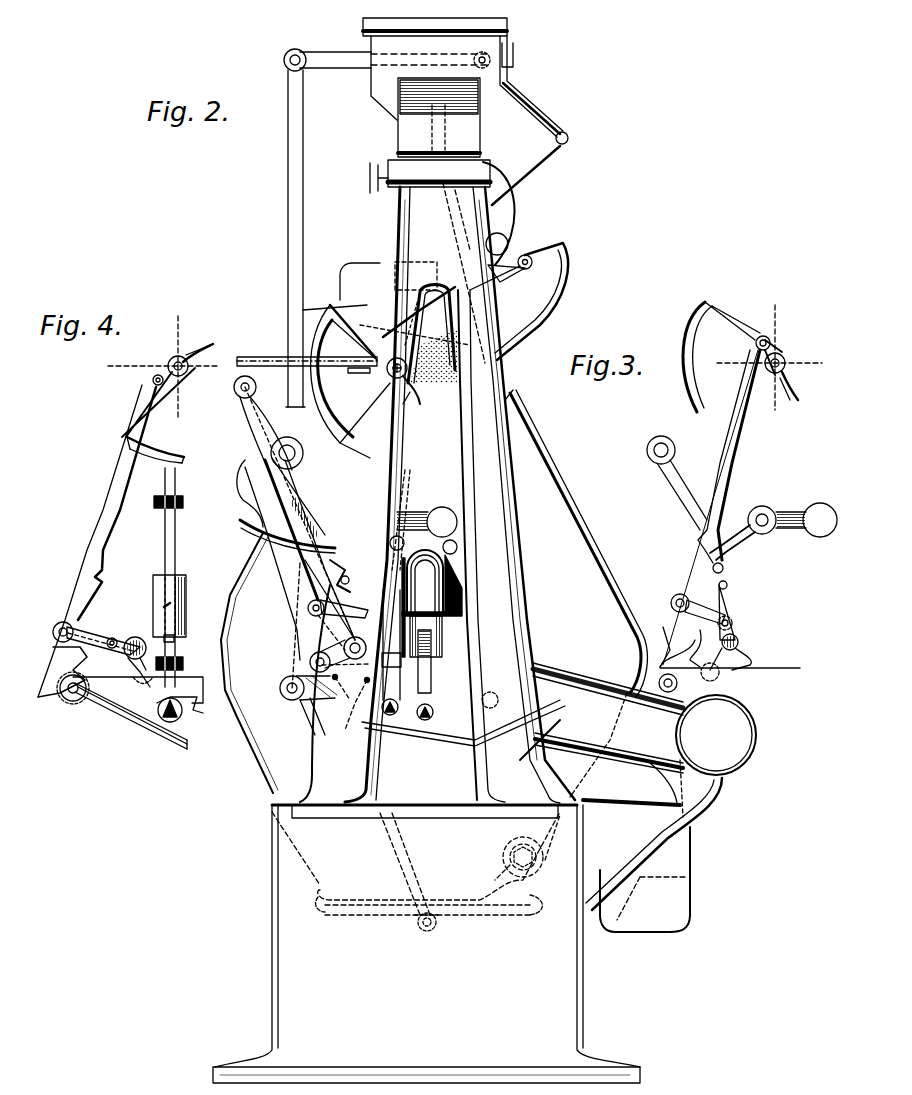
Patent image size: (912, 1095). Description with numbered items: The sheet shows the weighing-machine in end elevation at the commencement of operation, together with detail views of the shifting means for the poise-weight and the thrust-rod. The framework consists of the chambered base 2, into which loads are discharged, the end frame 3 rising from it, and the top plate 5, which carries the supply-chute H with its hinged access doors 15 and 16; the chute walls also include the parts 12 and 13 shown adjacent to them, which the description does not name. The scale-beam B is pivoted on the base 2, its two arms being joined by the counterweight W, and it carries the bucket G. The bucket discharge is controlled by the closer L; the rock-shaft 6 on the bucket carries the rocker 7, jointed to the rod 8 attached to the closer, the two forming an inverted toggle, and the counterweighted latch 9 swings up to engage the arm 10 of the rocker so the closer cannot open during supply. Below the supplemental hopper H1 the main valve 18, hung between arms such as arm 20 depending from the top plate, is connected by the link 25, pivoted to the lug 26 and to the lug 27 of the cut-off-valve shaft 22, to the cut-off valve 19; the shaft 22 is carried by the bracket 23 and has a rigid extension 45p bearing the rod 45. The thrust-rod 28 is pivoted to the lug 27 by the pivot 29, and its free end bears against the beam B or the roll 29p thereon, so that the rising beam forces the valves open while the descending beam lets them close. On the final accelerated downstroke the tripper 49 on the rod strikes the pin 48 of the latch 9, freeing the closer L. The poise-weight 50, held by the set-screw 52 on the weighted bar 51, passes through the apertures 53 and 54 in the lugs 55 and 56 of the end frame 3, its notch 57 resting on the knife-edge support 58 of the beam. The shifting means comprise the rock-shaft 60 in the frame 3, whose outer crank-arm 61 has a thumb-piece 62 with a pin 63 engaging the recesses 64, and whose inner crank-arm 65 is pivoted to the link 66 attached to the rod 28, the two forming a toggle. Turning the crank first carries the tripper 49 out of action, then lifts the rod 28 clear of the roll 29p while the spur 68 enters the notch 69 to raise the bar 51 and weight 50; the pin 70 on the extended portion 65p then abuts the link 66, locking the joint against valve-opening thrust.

In FIG. 2, the chambered base 2 is at (290, 934).
In FIG. 2, the end frame 3 is at (505, 555).
In FIG. 2, the top plate 5 is at (439, 117).
In FIG. 2, the rock-shaft 6 is at (293, 452).
In FIG. 3, the rock-shaft 6 is at (668, 448).
In FIG. 2, the rocker 7 is at (256, 506).
In FIG. 2, the rod 8 is at (297, 572).
In FIG. 2, the latch 9 is at (414, 511).
In FIG. 3, the latch 9 is at (784, 508).
In FIG. 2, the arm 10 is at (308, 520).
In FIG. 3, the arm 10 is at (680, 490).
In FIG. 2, the hopper wall 12 is at (388, 112).
In FIG. 2, the link 13 is at (532, 176).
In FIG. 2, the door 15 is at (535, 120).
In FIG. 2, the door 16 is at (394, 206).
In FIG. 2, the main valve 18 is at (546, 315).
In FIG. 2, the cut-off valve 19 is at (418, 396).
In FIG. 3, the cut-off valve 19 is at (787, 382).
In FIG. 4, the cut-off valve 19 is at (198, 345).
In FIG. 2, the arm 20 is at (513, 222).
In FIG. 2, the cut-off-valve shaft 22 is at (410, 372).
In FIG. 3, the cut-off-valve shaft 22 is at (786, 360).
In FIG. 4, the cut-off-valve shaft 22 is at (188, 370).
In FIG. 2, the bracket 23 is at (363, 305).
In FIG. 3, the bracket 23 is at (721, 357).
In FIG. 4, the bracket 23 is at (155, 450).
In FIG. 2, the link 25 is at (503, 280).
In FIG. 2, the lug 26 is at (535, 255).
In FIG. 2, the lug 27 is at (450, 307).
In FIG. 3, the lug 27 is at (778, 350).
In FIG. 4, the lug 27 is at (170, 362).
In FIG. 2, the thrust-rod 28 is at (318, 585).
In FIG. 3, the thrust-rod 28 is at (735, 458).
In FIG. 4, the thrust-rod 28 is at (106, 492).
In FIG. 2, the pivot 29 is at (398, 300).
In FIG. 3, the pivot 29 is at (768, 338).
In FIG. 4, the pivot 29 is at (153, 380).
In FIG. 2, the roll 29p is at (287, 697).
In FIG. 3, the roll 29p is at (665, 660).
In FIG. 4, the roll 29p is at (72, 702).
In FIG. 2, the rod 45 is at (262, 358).
In FIG. 2, the rigid extension 45p is at (349, 380).
In FIG. 2, the pin 48 is at (359, 577).
In FIG. 3, the pin 48 is at (723, 569).
In FIG. 2, the tripper 49 is at (297, 555).
In FIG. 3, the tripper 49 is at (722, 540).
In FIG. 4, the tripper 49 is at (98, 575).
In FIG. 2, the poise-weight 50 is at (425, 628).
In FIG. 4, the poise-weight 50 is at (186, 610).
In FIG. 2, the weighted bar 51 is at (397, 690).
In FIG. 4, the weighted bar 51 is at (177, 538).
In FIG. 2, the set-screw 52 is at (405, 628).
In FIG. 4, the set-screw 52 is at (178, 600).
In FIG. 4, the aperture 53 is at (177, 483).
In FIG. 4, the aperture 54 is at (176, 640).
In FIG. 4, the lug 55 is at (184, 500).
In FIG. 2, the lug 56 is at (433, 662).
In FIG. 4, the lug 56 is at (184, 664).
In FIG. 2, the notch 57 is at (421, 710).
In FIG. 4, the notch 57 is at (165, 710).
In FIG. 2, the knife-edge support 58 is at (388, 718).
In FIG. 4, the knife-edge support 58 is at (183, 712).
In FIG. 2, the rock-shaft 60 is at (343, 645).
In FIG. 3, the rock-shaft 60 is at (738, 640).
In FIG. 4, the rock-shaft 60 is at (135, 637).
In FIG. 2, the crank-arm 61 is at (318, 707).
In FIG. 2, the thumb-piece 62 is at (320, 668).
In FIG. 2, the pin 63 is at (310, 660).
In FIG. 2, the recesses 64 is at (346, 697).
In FIG. 3, the crank-arm 65 is at (733, 622).
In FIG. 4, the crank-arm 65 is at (112, 650).
In FIG. 3, the extended portion 65p is at (732, 600).
In FIG. 4, the extended portion 65p is at (97, 630).
In FIG. 2, the link 66 is at (360, 612).
In FIG. 3, the link 66 is at (680, 594).
In FIG. 4, the link 66 is at (62, 672).
In FIG. 3, the spur 68 is at (748, 662).
In FIG. 4, the spur 68 is at (143, 680).
In FIG. 4, the notch 69 is at (162, 606).
In FIG. 3, the pin 70 is at (728, 588).
In FIG. 4, the pin 70 is at (75, 625).
In FIG. 2, the supply-chute H is at (438, 74).
In FIG. 2, the supplemental hopper H1 is at (388, 281).
In FIG. 2, the bucket G is at (628, 772).
In FIG. 2, the scale-beam B is at (582, 740).
In FIG. 4, the scale-beam B is at (95, 700).
In FIG. 2, the counterweight W is at (671, 802).
In FIG. 2, the closer L is at (480, 908).